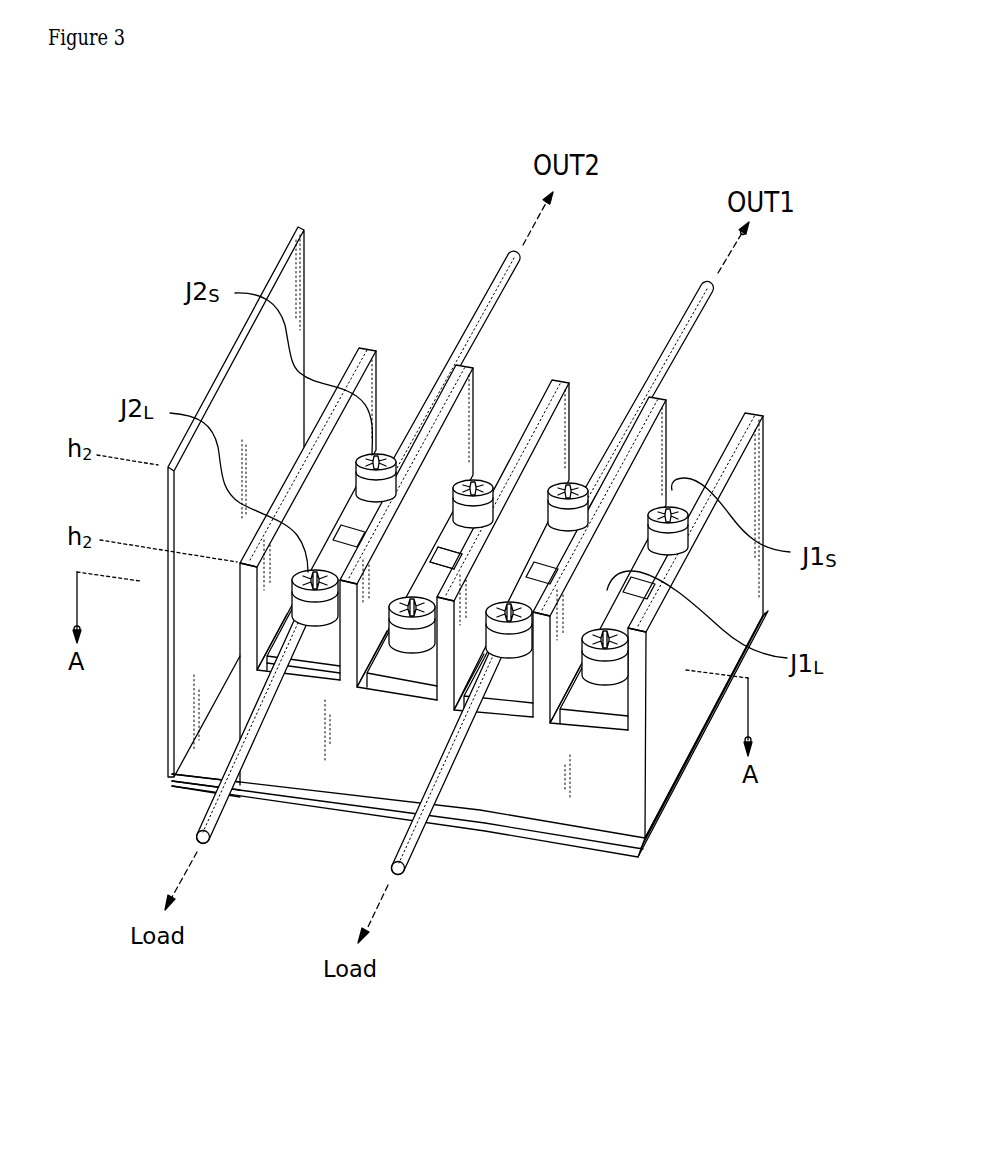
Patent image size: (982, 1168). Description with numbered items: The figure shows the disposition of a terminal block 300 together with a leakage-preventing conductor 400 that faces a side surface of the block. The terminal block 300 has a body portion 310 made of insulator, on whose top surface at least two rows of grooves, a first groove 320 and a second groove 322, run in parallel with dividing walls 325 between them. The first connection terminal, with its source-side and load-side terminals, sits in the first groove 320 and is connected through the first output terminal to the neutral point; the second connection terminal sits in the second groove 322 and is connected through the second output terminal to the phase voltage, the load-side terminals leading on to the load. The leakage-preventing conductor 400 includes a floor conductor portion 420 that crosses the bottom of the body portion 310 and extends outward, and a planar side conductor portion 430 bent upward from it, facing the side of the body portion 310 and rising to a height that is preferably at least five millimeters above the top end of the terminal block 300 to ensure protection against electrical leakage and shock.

The terminal block 300 is at (455, 579).
The body portion 310 is at (435, 771).
The first groove 320 is at (508, 710).
The second groove 322 is at (315, 674).
The dividing wall 325 is at (440, 653).
The leakage-preventing conductor 400 is at (177, 517).
The floor conductor portion 420 is at (197, 787).
The side conductor portion 430 is at (168, 680).